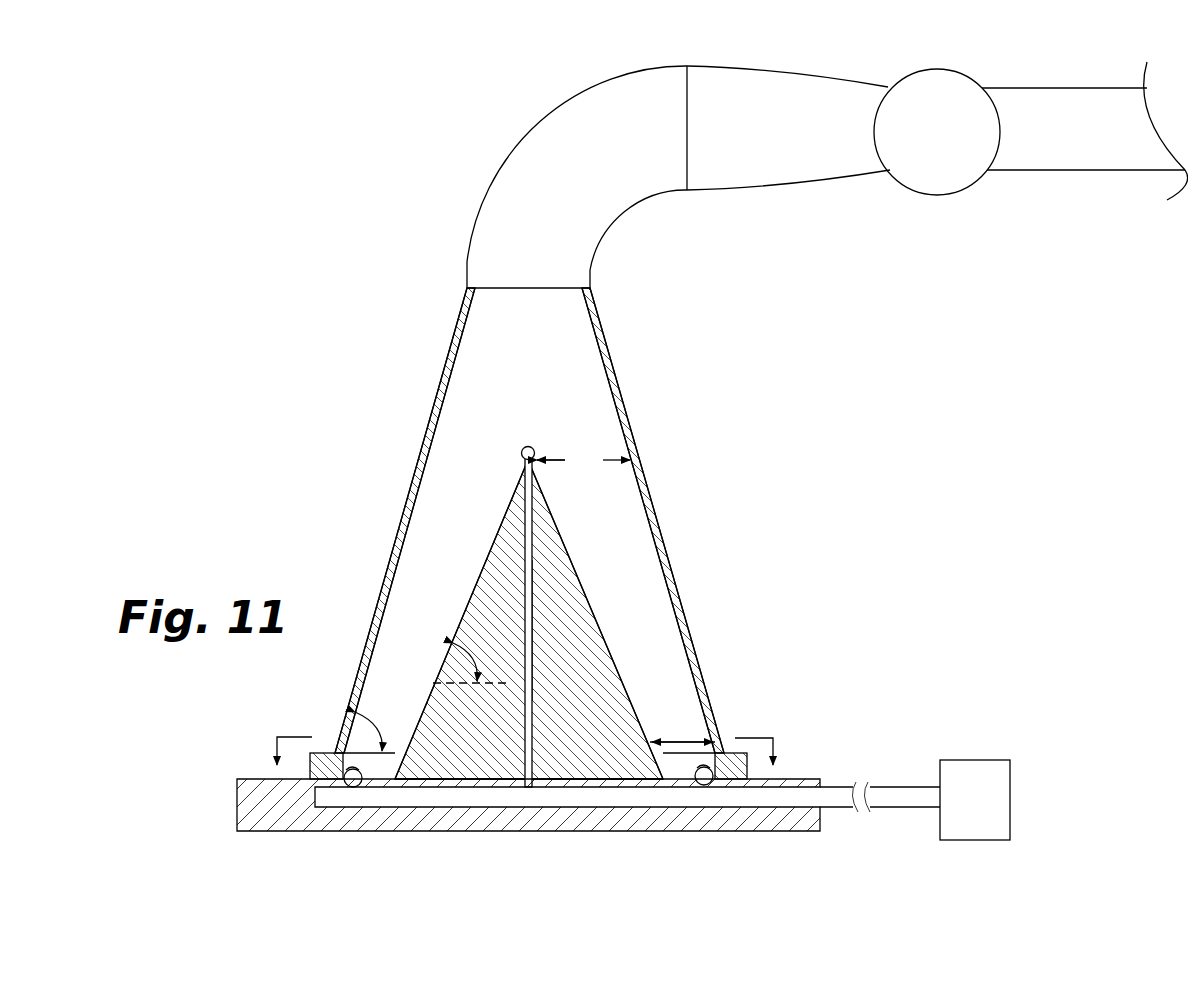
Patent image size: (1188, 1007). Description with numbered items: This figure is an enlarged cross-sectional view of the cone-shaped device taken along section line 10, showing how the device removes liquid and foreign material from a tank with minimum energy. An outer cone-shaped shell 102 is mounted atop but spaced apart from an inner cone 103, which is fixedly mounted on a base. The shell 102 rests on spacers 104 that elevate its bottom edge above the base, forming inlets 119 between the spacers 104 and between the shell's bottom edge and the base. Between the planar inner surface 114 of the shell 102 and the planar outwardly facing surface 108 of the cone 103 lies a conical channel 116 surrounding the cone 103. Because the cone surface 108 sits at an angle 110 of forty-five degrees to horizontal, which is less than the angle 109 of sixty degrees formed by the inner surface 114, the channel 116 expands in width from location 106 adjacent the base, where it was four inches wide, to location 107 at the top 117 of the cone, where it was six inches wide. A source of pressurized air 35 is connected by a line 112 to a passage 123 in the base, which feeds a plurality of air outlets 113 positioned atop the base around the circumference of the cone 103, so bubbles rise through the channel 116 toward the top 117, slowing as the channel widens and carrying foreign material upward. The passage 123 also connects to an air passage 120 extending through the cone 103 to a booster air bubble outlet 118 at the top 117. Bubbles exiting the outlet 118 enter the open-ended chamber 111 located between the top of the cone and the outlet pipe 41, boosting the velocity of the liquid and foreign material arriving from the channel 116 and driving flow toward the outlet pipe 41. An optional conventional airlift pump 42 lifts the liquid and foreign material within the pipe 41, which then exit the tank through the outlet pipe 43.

The section line 10 is at (523, 738).
The air 35 is at (975, 772).
The outlet pipe 41 is at (636, 92).
The airlift pump 42 is at (935, 103).
The outlet pipe 43 is at (1070, 115).
The outer cone shaped shell 102 is at (622, 387).
The inner cone 103 is at (560, 550).
The spacers 104 is at (308, 776).
The location 106 is at (672, 738).
The top of the cone 107 is at (583, 460).
The outwardly facing surface 108 is at (480, 565).
The angle 109 is at (384, 736).
The angle 110 is at (445, 661).
The open ended chamber 111 is at (570, 337).
The line 112 is at (893, 793).
The air outlets 113 is at (704, 786).
The inner surface 114 is at (423, 465).
The channel 116 is at (407, 593).
The top of the cone 117 is at (522, 480).
The booster air bubble outlet 118 is at (522, 448).
The inlets 119 is at (733, 762).
The air passage 120 is at (535, 620).
The passage 123 is at (620, 797).